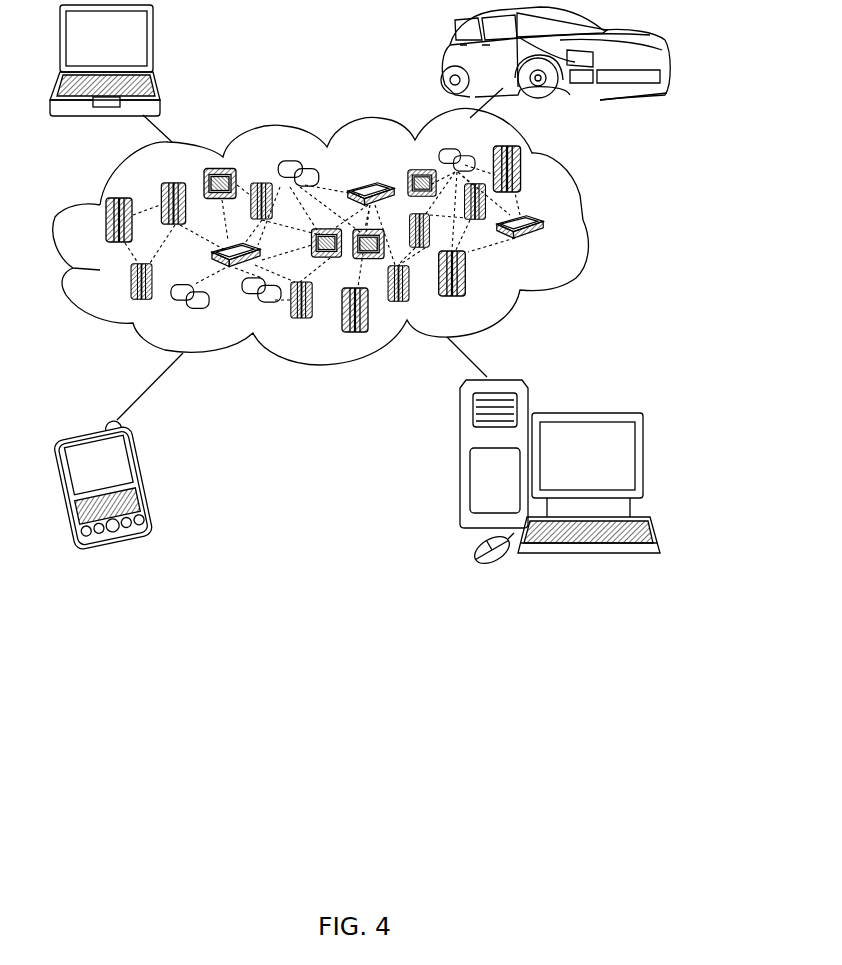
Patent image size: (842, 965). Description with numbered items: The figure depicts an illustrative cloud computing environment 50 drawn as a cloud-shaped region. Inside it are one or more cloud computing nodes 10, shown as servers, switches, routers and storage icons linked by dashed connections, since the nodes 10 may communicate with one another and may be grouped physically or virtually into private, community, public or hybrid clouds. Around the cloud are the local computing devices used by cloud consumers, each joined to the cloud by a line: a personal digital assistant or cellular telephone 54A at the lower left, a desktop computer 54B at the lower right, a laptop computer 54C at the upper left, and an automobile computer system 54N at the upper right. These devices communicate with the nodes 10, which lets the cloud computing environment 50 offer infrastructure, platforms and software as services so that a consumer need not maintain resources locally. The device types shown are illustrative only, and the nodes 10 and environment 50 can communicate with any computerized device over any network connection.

The cloud computing environment 50 is at (583, 220).
The cloud computing nodes 10 is at (552, 248).
The personal digital assistant or cellular telephone 54A is at (145, 475).
The desktop computer 54B is at (580, 413).
The laptop computer 54C is at (153, 43).
The automobile computer system 54N is at (438, 56).